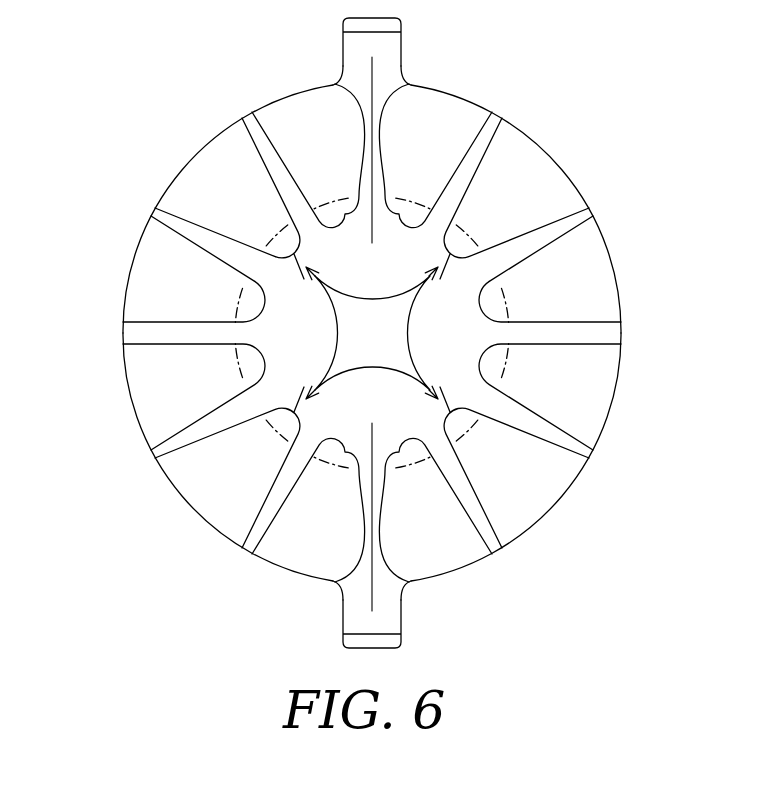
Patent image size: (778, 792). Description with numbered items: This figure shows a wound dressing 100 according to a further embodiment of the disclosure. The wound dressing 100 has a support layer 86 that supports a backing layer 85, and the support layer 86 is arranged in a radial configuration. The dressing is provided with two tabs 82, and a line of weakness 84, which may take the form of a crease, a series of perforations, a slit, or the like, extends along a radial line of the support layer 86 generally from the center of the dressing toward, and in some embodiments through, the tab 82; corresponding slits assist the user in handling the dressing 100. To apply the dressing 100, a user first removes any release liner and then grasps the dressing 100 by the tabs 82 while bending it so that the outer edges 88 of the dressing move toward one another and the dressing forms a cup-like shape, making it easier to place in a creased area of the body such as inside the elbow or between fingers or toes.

The tab 82 is at (392, 43).
The line of weakness 84 is at (368, 88).
The backing layer 85 is at (137, 308).
The support layer 86 is at (174, 214).
The outer edges 88 is at (608, 242).
The wound dressing 100 is at (364, 333).